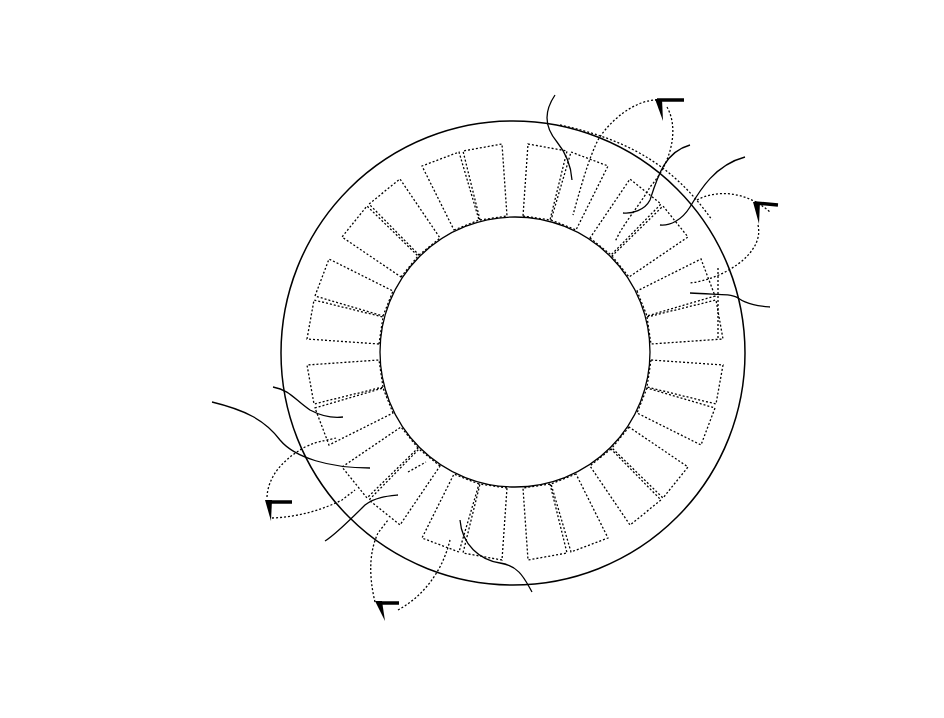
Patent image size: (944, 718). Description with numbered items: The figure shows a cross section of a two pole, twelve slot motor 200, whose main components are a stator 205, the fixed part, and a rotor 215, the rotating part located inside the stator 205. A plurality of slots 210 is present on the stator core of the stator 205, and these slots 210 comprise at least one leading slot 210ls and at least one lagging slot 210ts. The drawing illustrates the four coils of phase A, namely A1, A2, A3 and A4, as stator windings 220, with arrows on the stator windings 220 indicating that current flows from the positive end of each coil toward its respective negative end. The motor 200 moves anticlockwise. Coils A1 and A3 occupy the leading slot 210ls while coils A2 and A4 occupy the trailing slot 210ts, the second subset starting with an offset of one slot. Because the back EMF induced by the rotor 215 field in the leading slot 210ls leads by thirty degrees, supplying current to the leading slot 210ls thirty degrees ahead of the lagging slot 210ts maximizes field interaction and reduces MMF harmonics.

The motor 200 is at (186, 203).
The stator 205 is at (322, 243).
The slots 210 is at (693, 430).
The leading slot 210ls is at (690, 303).
The lagging slot 210ts is at (418, 467).
The rotor 215 is at (442, 307).
The stator windings 220 is at (630, 103).